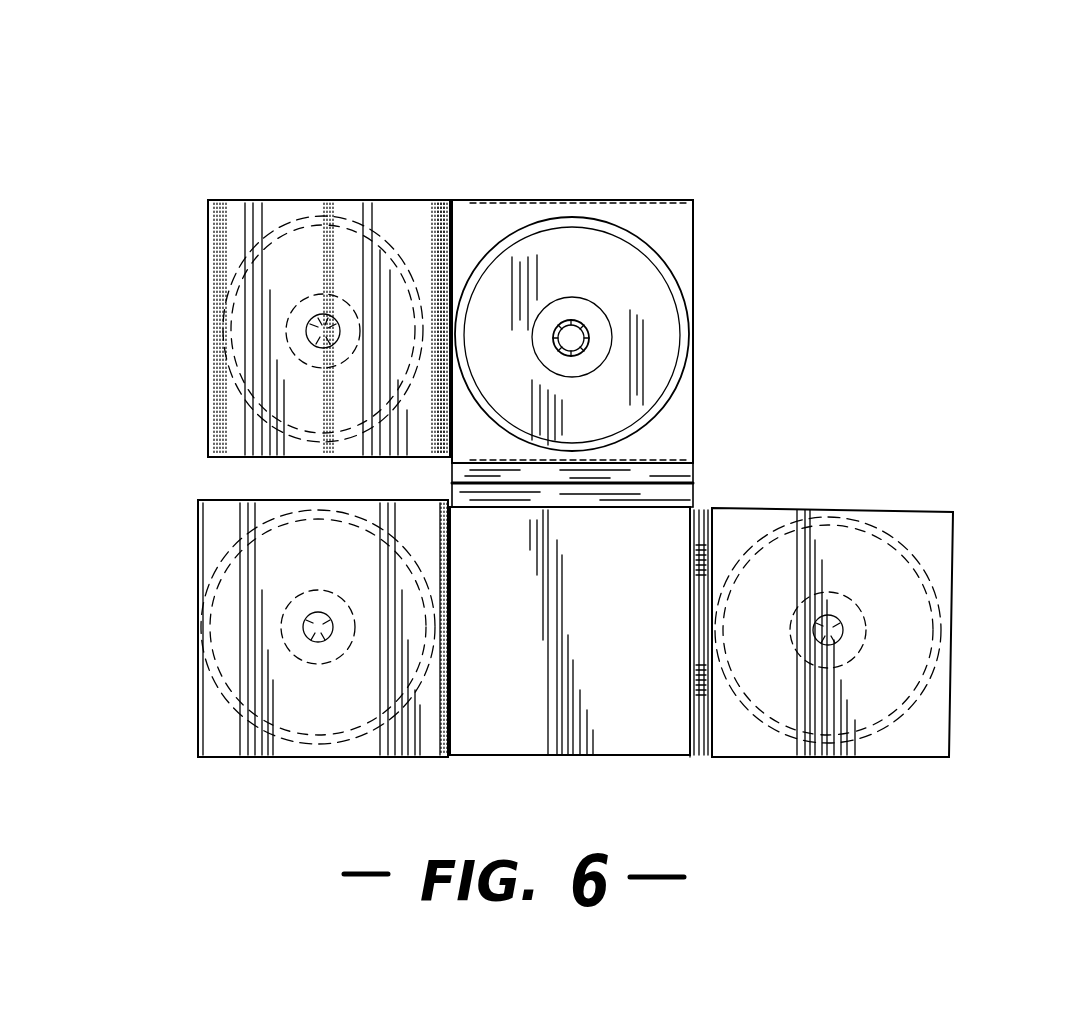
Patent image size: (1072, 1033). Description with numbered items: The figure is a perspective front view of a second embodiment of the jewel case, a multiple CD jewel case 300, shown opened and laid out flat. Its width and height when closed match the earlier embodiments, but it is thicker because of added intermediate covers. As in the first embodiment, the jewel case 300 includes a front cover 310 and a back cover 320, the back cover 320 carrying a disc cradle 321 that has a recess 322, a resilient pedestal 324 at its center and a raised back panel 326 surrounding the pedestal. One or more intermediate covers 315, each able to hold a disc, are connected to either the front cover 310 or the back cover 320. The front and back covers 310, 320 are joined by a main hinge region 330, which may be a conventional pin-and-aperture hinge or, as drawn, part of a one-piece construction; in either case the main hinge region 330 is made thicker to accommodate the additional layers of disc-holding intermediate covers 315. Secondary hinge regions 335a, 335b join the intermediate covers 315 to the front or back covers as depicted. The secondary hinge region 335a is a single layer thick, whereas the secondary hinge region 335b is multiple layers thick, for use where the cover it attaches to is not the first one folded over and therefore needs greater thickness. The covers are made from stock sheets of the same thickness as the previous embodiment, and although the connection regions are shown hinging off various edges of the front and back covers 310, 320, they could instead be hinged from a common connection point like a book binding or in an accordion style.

The multiple CD jewel case 300 is at (648, 46).
The front cover 310 is at (652, 648).
The intermediate covers 315 is at (337, 198).
The back cover 320 is at (641, 307).
The disc cradle 321 is at (657, 338).
The recess 322 is at (563, 350).
The resilient pedestal 324 is at (584, 352).
The raised back panel 326 is at (544, 352).
The main hinge region 330 is at (688, 495).
The secondary hinge region 335a is at (447, 198).
The secondary hinge region 335b is at (697, 757).